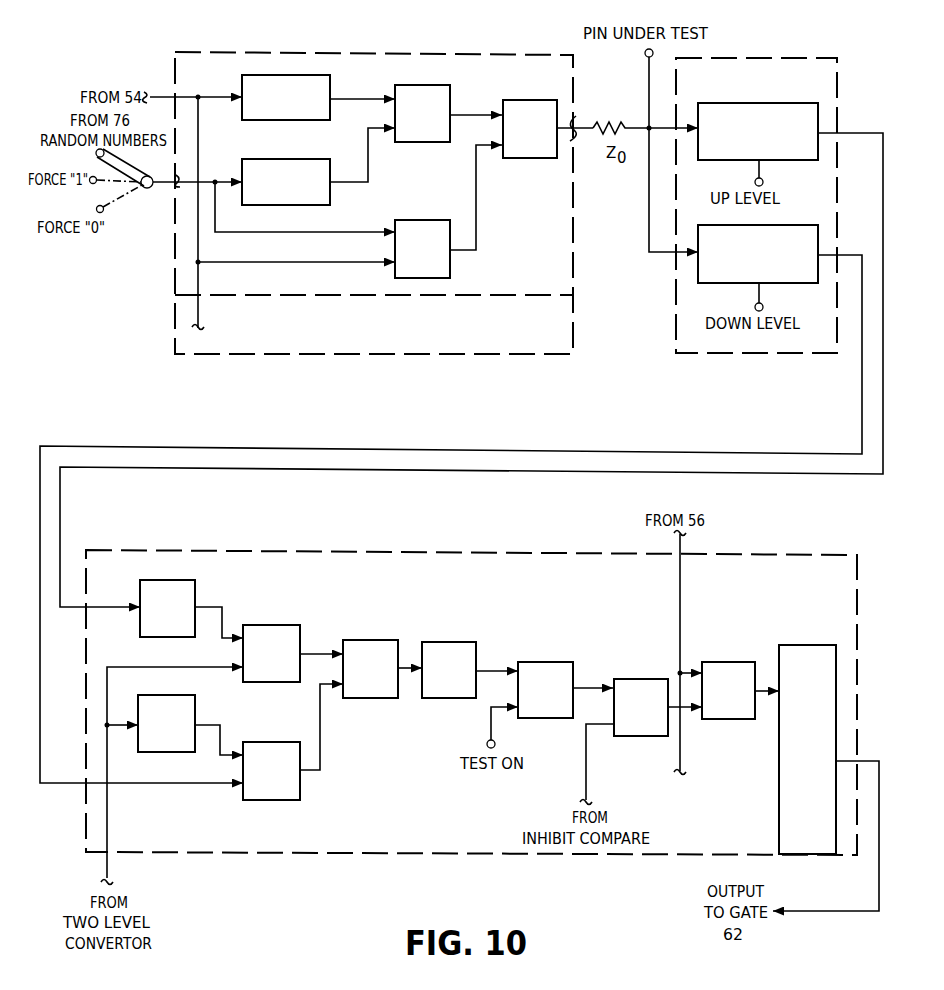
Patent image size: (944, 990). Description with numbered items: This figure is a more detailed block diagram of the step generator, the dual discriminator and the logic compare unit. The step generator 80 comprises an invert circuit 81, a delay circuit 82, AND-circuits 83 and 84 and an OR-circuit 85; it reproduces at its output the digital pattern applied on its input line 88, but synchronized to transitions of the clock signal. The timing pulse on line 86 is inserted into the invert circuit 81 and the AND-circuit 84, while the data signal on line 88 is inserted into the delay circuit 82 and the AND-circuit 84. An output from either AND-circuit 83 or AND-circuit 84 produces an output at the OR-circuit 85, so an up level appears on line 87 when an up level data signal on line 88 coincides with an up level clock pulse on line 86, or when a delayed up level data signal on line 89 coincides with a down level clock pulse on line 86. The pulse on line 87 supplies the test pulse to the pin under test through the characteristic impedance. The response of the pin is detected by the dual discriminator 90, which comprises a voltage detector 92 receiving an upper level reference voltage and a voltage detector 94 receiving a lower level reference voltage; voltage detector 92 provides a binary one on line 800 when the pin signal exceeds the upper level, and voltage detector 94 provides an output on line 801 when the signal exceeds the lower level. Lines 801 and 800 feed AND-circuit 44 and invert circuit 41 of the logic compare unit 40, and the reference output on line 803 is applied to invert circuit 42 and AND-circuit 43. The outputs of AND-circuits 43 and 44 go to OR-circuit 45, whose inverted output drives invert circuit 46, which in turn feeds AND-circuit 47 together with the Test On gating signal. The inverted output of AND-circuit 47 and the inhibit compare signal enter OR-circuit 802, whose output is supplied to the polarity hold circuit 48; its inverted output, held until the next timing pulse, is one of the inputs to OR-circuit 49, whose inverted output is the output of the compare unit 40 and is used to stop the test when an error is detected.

The step generator 80 is at (530, 57).
The invert circuit 81 is at (322, 80).
The delay circuit 82 is at (301, 161).
The AND-circuit 83 is at (425, 92).
The AND-circuit 84 is at (425, 225).
The OR-circuit 85 is at (535, 105).
The clock pulse line 86 is at (186, 97).
The output line 87 is at (634, 116).
The input line 88 is at (171, 195).
The delayed data line 89 is at (368, 174).
The dual discriminator 90 is at (797, 59).
The voltage detector 92 is at (787, 103).
The voltage detector 94 is at (786, 225).
The output line 800 is at (849, 132).
The output line 801 is at (834, 254).
The reference output line 803 is at (108, 811).
The OR-circuit 802 is at (639, 679).
The logic compare unit 40 is at (809, 554).
The invert circuit 41 is at (176, 586).
The invert circuit 42 is at (176, 701).
The AND-circuit 43 is at (279, 627).
The AND-circuit 44 is at (279, 745).
The OR-circuit 45 is at (371, 641).
The invert circuit 46 is at (450, 643).
The AND-circuit 47 is at (549, 662).
The polarity hold circuit 48 is at (728, 663).
The OR-circuit 49 is at (810, 646).